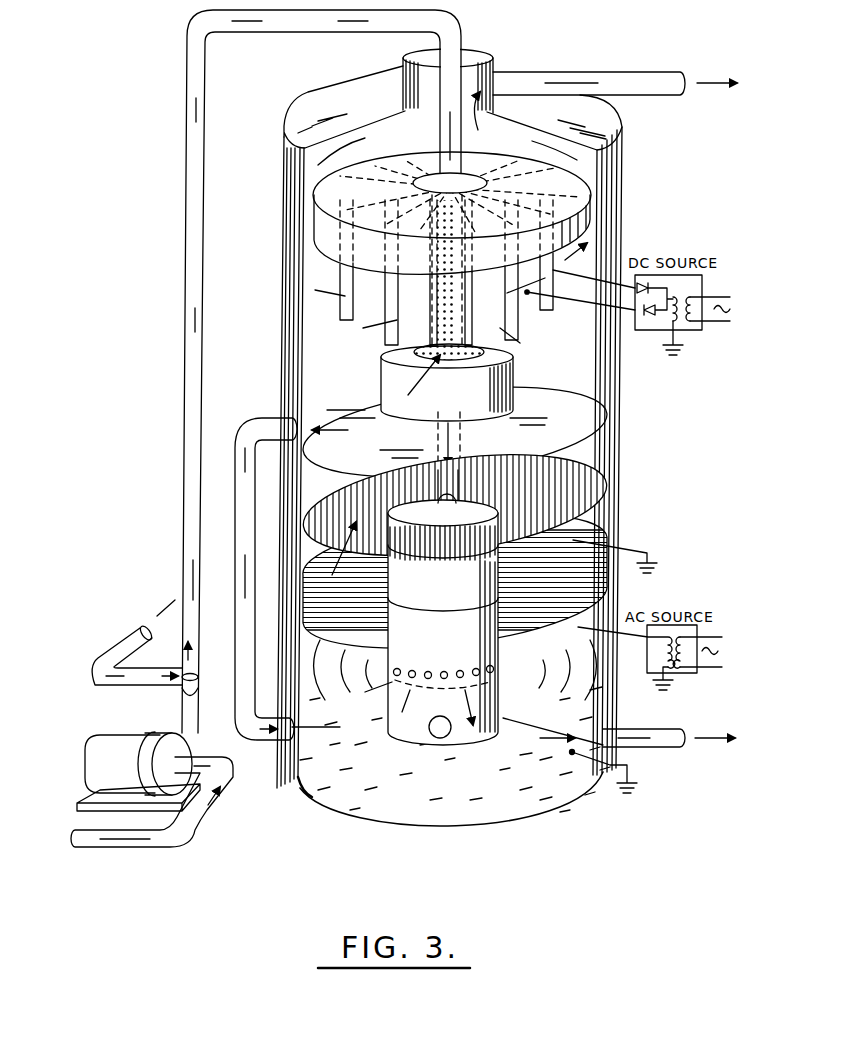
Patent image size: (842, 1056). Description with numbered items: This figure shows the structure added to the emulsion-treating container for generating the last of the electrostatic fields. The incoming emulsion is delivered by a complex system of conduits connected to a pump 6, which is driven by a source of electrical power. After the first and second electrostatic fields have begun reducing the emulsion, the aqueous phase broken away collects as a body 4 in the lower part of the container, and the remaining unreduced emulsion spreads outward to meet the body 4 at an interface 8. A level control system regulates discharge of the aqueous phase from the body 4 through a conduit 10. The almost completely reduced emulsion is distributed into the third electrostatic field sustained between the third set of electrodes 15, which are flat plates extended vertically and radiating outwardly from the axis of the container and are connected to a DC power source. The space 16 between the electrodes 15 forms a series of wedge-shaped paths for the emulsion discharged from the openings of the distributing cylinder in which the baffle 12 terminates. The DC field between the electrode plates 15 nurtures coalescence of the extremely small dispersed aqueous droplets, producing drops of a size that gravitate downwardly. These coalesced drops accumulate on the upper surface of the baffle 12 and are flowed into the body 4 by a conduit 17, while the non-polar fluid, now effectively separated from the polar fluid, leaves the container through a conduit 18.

The body 4 is at (493, 803).
The pump 6 is at (135, 736).
The interface 8 is at (510, 728).
The conduit 10 is at (658, 729).
The baffle 12 is at (578, 428).
The electrodes 15 is at (548, 305).
The space 16 is at (515, 205).
The conduit 17 is at (234, 577).
The conduit 18 is at (648, 72).